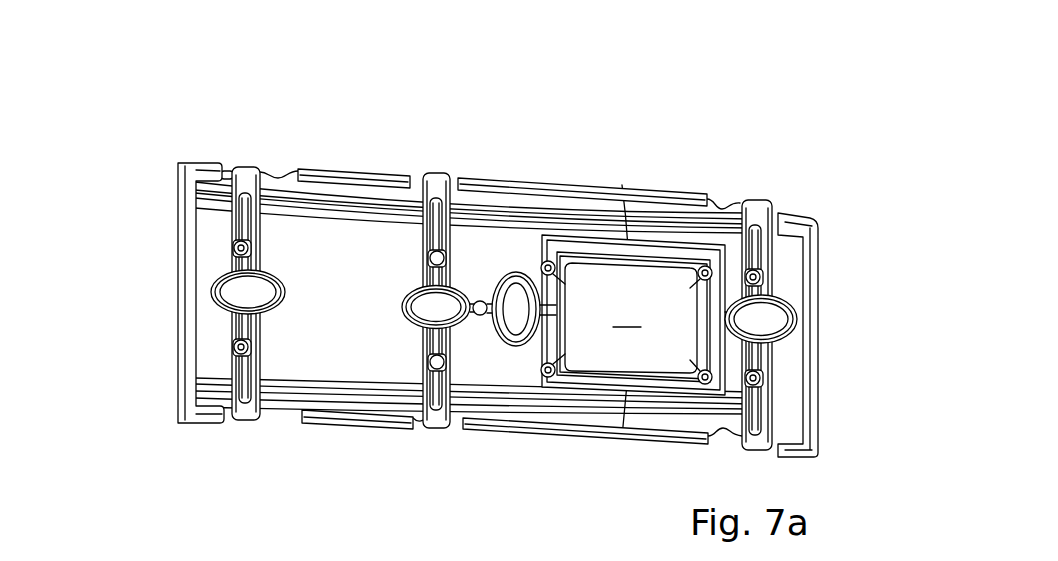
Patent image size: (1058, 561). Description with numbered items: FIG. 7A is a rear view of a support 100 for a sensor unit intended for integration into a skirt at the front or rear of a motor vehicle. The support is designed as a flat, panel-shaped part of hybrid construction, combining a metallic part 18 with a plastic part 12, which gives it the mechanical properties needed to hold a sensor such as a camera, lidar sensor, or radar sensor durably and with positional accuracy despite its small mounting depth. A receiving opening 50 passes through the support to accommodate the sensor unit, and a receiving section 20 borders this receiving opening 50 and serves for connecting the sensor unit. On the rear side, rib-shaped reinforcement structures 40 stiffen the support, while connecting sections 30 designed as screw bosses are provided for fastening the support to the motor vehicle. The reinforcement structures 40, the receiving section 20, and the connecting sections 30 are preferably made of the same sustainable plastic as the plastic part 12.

The support 100 is at (501, 267).
The plastic part 12 is at (491, 172).
The metallic part 18 is at (718, 196).
The receiving section 20 is at (552, 338).
The connecting sections 30 is at (768, 278).
The reinforcement structures 40 is at (236, 222).
The receiving opening 50 is at (633, 315).